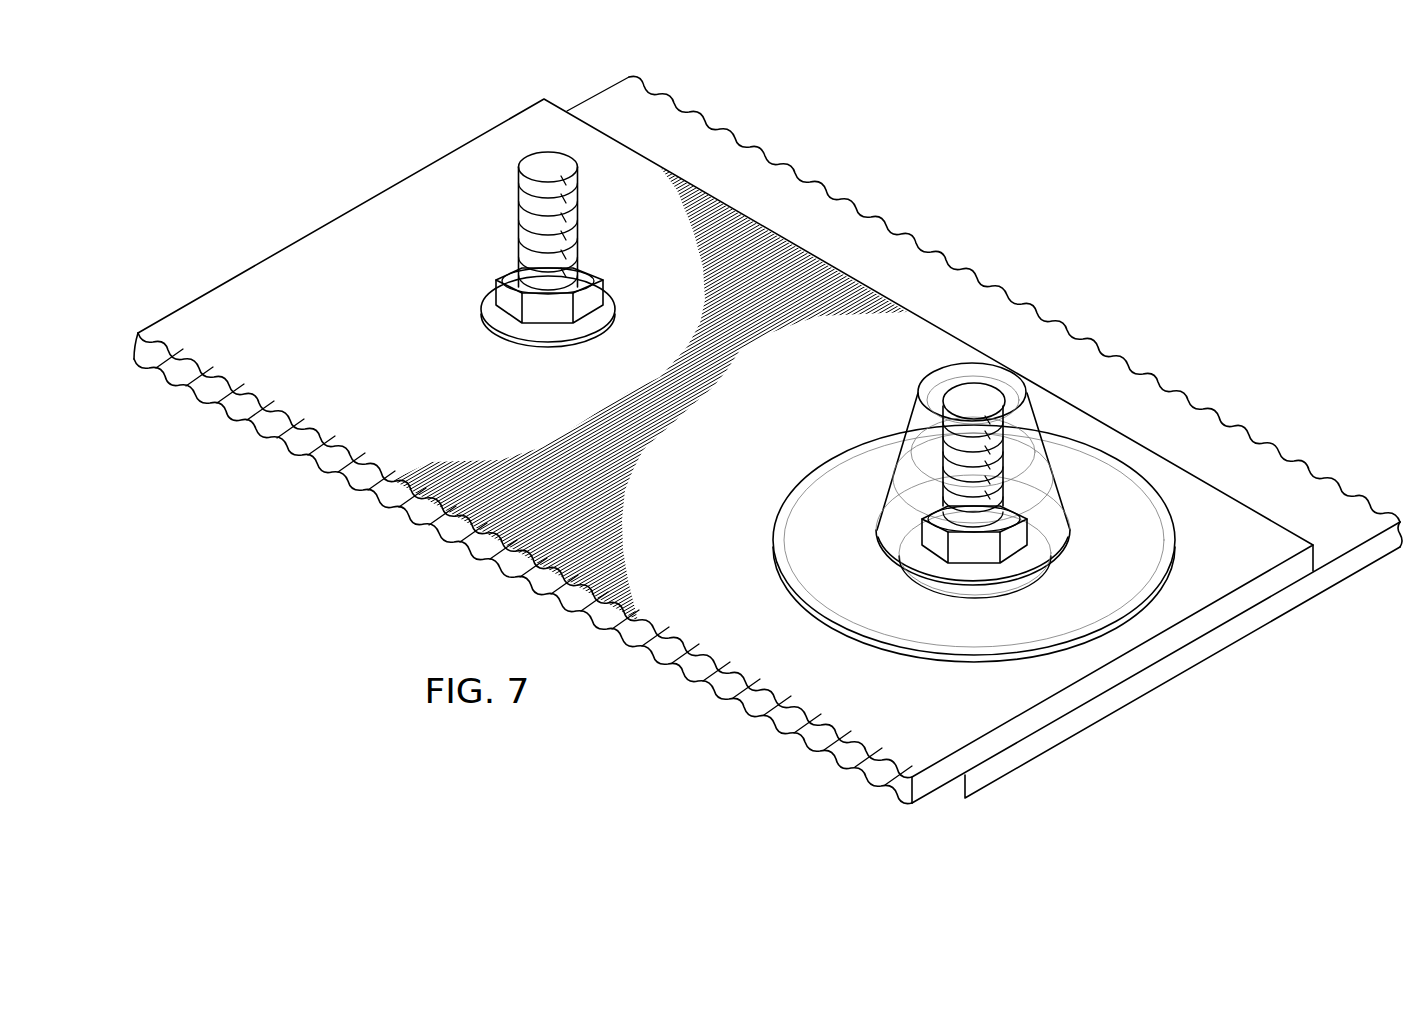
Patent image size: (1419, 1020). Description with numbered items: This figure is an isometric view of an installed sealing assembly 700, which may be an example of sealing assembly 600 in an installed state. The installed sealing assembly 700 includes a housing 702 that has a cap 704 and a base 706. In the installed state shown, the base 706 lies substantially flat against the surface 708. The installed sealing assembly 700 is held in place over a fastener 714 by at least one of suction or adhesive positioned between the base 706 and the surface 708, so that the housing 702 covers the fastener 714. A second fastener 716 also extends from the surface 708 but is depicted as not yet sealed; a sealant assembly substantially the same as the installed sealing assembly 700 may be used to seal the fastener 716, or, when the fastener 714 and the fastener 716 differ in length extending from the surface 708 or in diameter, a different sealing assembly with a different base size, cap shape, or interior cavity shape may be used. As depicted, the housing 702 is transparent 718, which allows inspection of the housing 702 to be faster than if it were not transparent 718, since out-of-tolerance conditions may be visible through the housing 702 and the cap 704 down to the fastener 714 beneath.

The installed sealing assembly 700 is at (1022, 127).
The base 706 is at (1156, 534).
The surface 708 is at (285, 263).
The fastener 716 is at (518, 211).
The sealing assembly 600 is at (826, 391).
The transparent 718 is at (797, 514).
The housing 702 is at (911, 408).
The fastener 714 is at (973, 398).
The cap 704 is at (1064, 485).